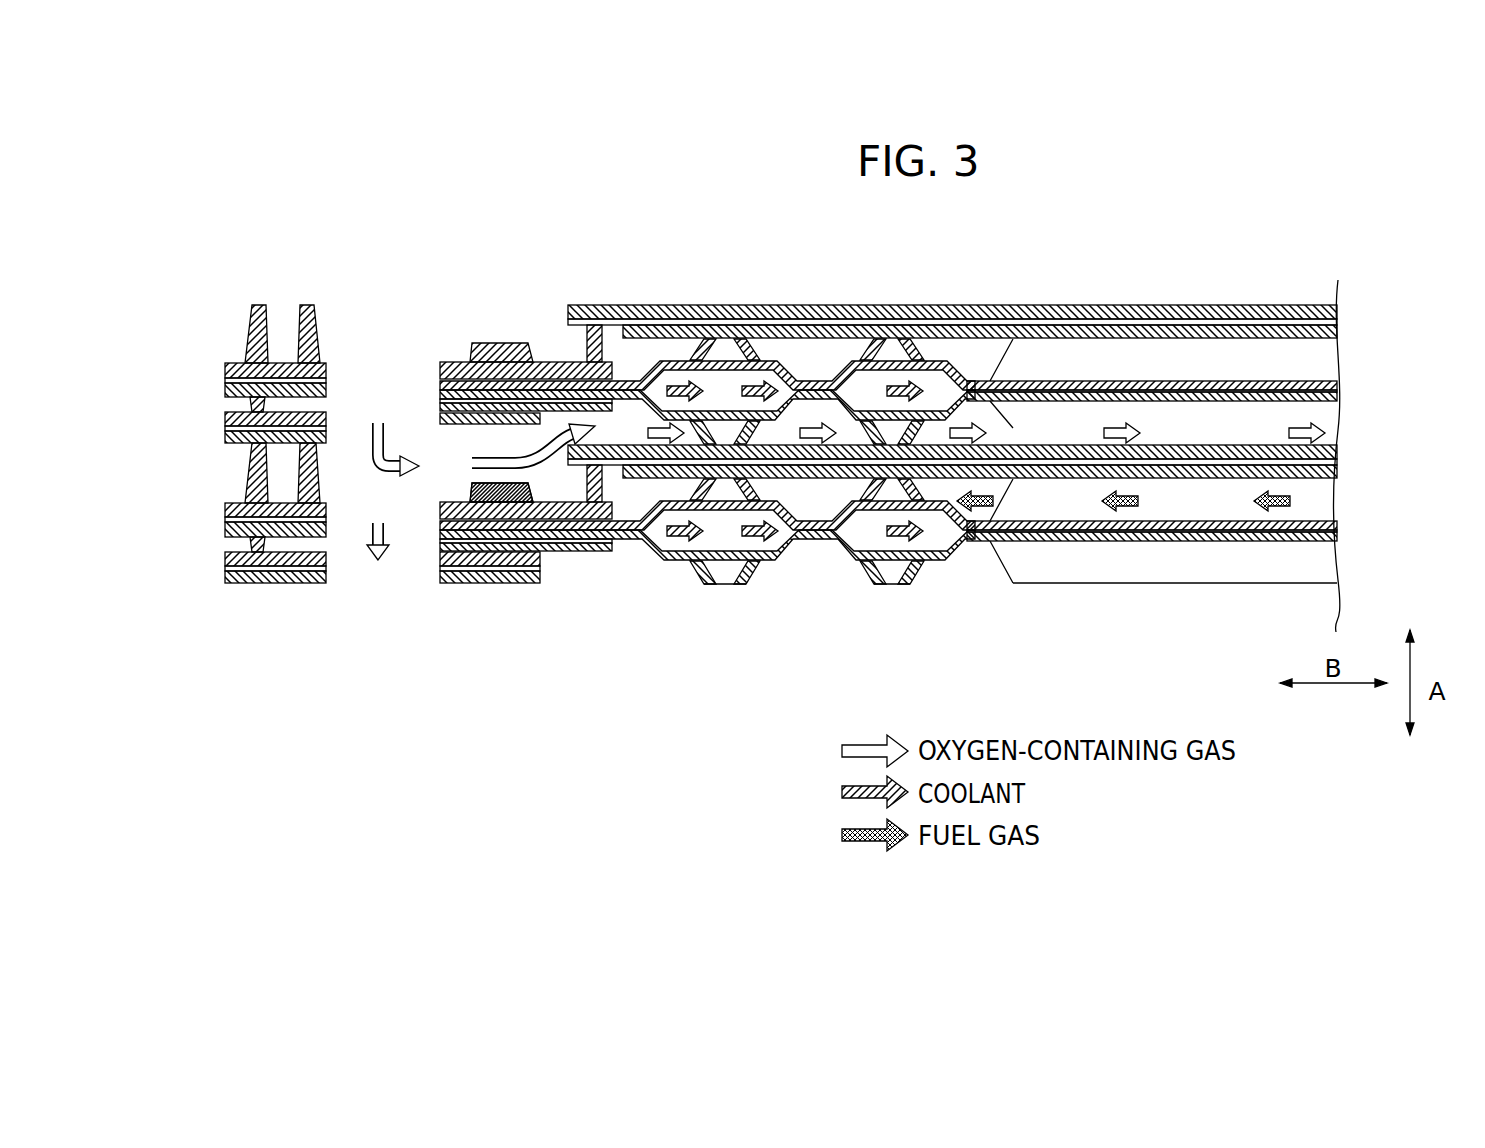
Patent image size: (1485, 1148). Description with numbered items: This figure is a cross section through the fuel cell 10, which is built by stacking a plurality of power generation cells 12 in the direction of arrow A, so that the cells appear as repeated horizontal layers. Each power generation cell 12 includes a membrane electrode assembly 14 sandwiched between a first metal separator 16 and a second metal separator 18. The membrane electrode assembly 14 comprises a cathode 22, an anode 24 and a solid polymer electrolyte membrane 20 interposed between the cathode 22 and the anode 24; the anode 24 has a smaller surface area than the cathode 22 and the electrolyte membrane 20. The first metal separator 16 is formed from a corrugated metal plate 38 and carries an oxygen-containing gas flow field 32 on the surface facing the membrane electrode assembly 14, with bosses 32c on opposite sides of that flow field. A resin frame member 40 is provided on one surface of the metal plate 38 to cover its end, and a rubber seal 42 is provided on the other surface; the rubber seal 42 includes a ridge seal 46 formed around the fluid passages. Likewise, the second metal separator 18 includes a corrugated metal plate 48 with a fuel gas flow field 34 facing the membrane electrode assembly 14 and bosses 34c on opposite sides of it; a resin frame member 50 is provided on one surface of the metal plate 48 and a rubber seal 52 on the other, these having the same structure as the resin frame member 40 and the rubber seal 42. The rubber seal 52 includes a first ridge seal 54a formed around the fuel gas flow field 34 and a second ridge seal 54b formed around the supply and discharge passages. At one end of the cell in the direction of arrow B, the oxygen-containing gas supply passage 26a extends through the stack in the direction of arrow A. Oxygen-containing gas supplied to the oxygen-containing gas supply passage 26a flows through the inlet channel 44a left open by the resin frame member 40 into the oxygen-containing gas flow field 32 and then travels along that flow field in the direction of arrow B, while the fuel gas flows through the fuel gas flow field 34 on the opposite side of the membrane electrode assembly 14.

The fuel cell 10 is at (707, 186).
The power generation cell 12 is at (805, 252).
The membrane electrode assembly 14 is at (790, 430).
The first metal separator 16 is at (762, 359).
The second metal separator 18 is at (855, 496).
The solid polymer electrolyte membrane 20 is at (1243, 450).
The cathode 22 is at (1212, 440).
The anode 24 is at (1282, 440).
The oxygen-containing gas supply passage 26a is at (397, 385).
The oxygen-containing gas flow field 32 is at (1073, 420).
The bosses 32c is at (734, 401).
The fuel gas flow field 34 is at (1089, 500).
The bosses 34c is at (725, 493).
The corrugated metal plate 38 is at (591, 305).
The resin frame member 40 is at (225, 440).
The rubber seal 42 is at (225, 413).
The inlet channel 44a is at (517, 452).
The ridge seal 46 is at (498, 345).
The corrugated metal plate 48 is at (630, 512).
The resin frame member 50 is at (225, 537).
The rubber seal 52 is at (225, 510).
The first ridge seal 54a is at (575, 500).
The second ridge seal 54b is at (316, 472).